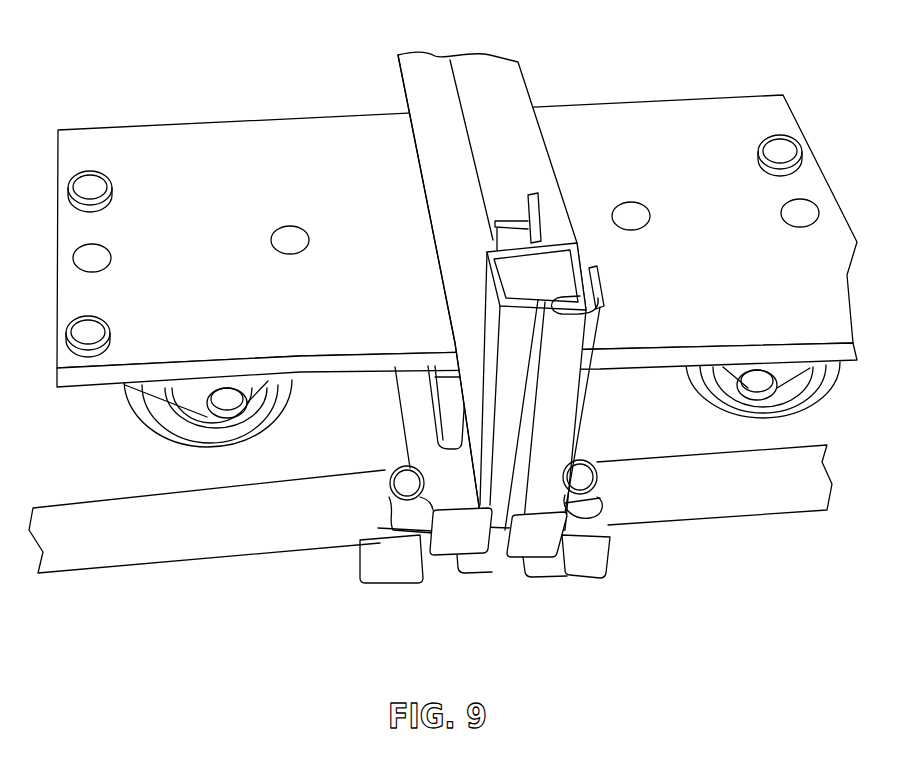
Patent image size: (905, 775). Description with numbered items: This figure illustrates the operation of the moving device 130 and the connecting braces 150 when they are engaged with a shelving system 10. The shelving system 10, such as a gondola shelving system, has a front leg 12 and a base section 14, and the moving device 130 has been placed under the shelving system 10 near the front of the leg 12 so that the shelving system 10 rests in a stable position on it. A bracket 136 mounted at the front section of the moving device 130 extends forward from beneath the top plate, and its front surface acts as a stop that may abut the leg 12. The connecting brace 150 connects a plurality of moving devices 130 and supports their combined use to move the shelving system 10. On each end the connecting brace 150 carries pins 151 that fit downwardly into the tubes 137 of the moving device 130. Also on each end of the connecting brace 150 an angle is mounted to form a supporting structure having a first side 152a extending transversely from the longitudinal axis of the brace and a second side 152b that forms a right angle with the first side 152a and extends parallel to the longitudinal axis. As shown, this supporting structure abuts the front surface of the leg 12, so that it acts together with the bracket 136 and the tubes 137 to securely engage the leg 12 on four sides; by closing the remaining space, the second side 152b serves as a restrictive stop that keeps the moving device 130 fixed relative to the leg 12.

The shelving system 10 is at (440, 155).
The front leg 12 is at (475, 367).
The base section 14 is at (440, 239).
The moving device 130 is at (98, 378).
The bracket 136 is at (413, 402).
The tubes 137 is at (400, 573).
The connecting brace 150 is at (257, 535).
The pins 151 is at (406, 485).
The first side 152a is at (413, 540).
The second side 152b is at (465, 543).